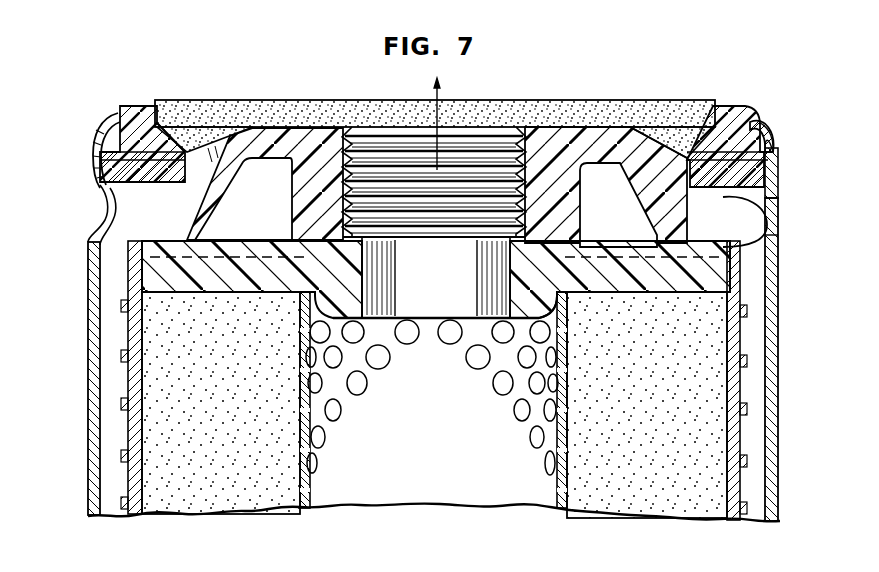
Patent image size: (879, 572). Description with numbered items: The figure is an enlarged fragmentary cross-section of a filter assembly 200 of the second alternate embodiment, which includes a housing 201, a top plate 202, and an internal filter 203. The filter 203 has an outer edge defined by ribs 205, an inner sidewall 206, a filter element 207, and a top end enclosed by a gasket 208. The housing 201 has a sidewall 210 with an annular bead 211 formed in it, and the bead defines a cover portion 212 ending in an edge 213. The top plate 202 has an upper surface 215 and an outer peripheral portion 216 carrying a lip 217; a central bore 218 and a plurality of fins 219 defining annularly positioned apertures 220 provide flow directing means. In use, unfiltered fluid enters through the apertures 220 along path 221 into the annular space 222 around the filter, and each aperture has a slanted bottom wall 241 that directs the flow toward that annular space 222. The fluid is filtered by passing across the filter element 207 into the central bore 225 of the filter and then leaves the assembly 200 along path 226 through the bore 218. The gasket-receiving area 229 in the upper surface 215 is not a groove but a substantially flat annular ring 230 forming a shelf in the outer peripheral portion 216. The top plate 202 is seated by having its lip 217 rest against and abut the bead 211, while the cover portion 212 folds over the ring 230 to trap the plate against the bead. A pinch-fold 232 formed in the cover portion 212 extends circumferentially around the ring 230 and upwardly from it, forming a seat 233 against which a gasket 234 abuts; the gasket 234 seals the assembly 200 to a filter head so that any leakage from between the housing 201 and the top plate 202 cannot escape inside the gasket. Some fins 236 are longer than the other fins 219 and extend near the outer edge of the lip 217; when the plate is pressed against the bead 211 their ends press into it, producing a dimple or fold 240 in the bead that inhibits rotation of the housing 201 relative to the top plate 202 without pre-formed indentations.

The assembly 200 is at (652, 75).
The housing 201 is at (781, 500).
The top plate 202 is at (533, 127).
The internal filter 203 is at (126, 494).
The ribs 205 is at (747, 459).
The inner sidewall 206 is at (560, 472).
The filter element 207 is at (637, 483).
The gasket 208 is at (660, 292).
The sidewall 210 is at (87, 455).
The annular bead 211 is at (100, 207).
The cover portion 212 is at (93, 142).
The edge 213 is at (188, 150).
The upper surface 215 is at (310, 127).
The outer peripheral portion 216 is at (770, 160).
The lip 217 is at (98, 188).
The central bore 218 is at (455, 291).
The fins 219 is at (100, 247).
The apertures 220 is at (664, 162).
The path 221 is at (175, 207).
The annular space 222 is at (743, 520).
The central bore 225 is at (406, 470).
The path 226 is at (441, 92).
The gasket-receiving area 229 is at (140, 140).
The flat annular ring 230 is at (115, 172).
The pinch-fold 232 is at (758, 119).
The seat 233 is at (764, 142).
The gasket 234 is at (725, 105).
The longer fins 236 is at (766, 237).
The dimple or fold 240 is at (764, 190).
The slanted bottom wall 241 is at (227, 183).